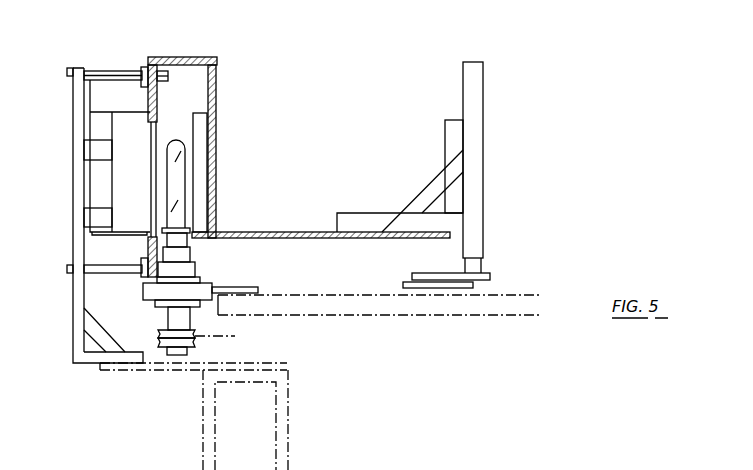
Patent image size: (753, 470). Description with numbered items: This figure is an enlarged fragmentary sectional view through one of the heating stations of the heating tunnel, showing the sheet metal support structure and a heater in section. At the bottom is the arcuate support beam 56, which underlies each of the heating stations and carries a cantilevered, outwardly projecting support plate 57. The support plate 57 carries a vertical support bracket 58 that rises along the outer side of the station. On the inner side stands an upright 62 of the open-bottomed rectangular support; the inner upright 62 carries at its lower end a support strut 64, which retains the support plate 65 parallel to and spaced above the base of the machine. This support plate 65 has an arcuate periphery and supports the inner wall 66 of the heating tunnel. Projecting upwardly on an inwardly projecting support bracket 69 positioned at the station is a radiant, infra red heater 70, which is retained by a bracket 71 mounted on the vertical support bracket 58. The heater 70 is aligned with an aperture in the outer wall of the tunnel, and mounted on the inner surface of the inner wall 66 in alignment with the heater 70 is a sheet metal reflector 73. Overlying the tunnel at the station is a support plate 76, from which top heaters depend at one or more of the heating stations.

The arcuate support beam 56 is at (207, 440).
The support plate 57 is at (157, 365).
The vertical support bracket 58 is at (73, 182).
The upright 62 is at (483, 97).
The support strut 64 is at (445, 138).
The support plate 65 is at (300, 231).
The inner wall 66 is at (217, 103).
The support bracket 69 is at (150, 100).
The radiant infra red heater 70 is at (120, 157).
The bracket 71 is at (86, 150).
The sheet metal reflector 73 is at (203, 153).
The support plate 76 is at (206, 58).